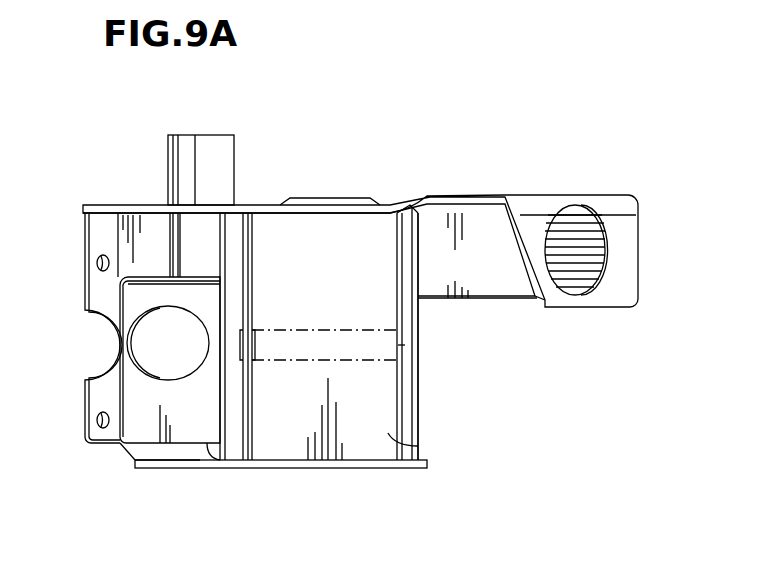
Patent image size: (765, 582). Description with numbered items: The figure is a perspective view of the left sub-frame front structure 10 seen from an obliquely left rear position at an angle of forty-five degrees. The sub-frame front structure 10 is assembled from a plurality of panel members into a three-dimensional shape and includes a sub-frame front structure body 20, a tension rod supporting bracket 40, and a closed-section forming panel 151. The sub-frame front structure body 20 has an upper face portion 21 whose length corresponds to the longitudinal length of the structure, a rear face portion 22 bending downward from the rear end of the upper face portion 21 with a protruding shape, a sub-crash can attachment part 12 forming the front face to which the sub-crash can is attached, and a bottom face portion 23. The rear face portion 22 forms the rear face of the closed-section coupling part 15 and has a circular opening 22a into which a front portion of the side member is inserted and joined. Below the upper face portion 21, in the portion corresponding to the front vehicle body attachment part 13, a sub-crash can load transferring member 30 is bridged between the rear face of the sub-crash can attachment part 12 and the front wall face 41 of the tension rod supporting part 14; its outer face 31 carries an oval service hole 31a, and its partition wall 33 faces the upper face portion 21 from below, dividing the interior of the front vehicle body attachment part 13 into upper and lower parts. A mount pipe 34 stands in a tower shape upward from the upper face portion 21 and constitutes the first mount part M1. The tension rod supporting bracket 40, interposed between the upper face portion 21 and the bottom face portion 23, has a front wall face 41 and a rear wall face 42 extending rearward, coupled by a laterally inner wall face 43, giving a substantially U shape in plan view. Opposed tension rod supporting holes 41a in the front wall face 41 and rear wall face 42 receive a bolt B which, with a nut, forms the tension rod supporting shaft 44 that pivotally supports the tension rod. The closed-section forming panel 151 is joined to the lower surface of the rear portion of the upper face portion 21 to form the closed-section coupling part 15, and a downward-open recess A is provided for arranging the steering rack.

The sub-frame front structure 10 is at (456, 138).
The sub-crash can attachment part 12 is at (85, 263).
The front vehicle body attachment part 13 is at (175, 490).
The tension rod supporting part 14 is at (371, 478).
The closed-section coupling part 15 is at (523, 306).
The closed-section forming panel 151 is at (432, 299).
The sub-frame front structure body 20 is at (578, 178).
The upper face portion 21 is at (130, 206).
The rear face portion 22 is at (630, 290).
The circular opening 22a is at (592, 247).
The bottom face portion 23 is at (290, 470).
The sub-crash can load transferring member 30 is at (190, 468).
The outer face 31 is at (141, 462).
The service hole 31a is at (185, 354).
The partition wall 33 is at (208, 275).
The mount pipe 34 is at (236, 170).
The first mount part M1 is at (239, 129).
The tension rod supporting bracket 40 is at (422, 363).
The front wall face 41 is at (200, 463).
The tension rod supporting hole 41a is at (248, 353).
The rear wall face 42 is at (420, 420).
The laterally inner wall face 43 is at (418, 446).
The tension rod supporting shaft 44 is at (290, 328).
The recess A is at (536, 411).
The bolt B is at (360, 330).